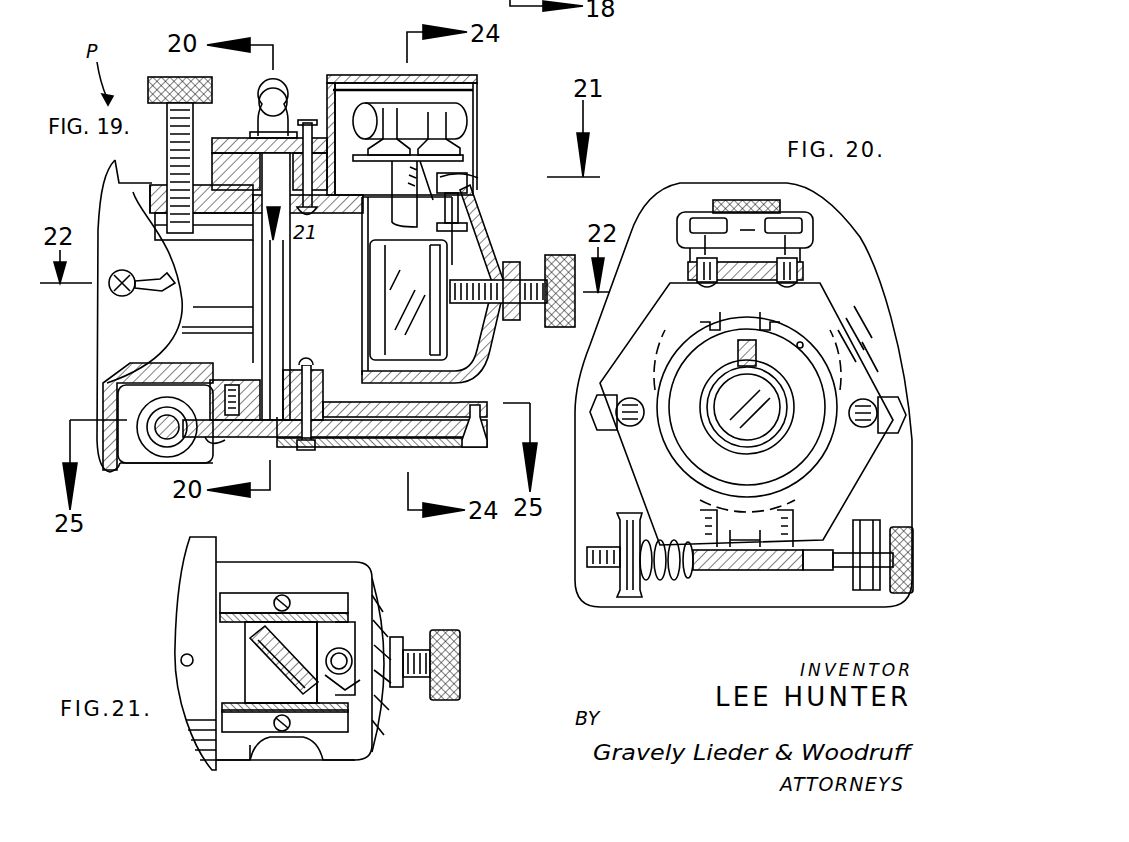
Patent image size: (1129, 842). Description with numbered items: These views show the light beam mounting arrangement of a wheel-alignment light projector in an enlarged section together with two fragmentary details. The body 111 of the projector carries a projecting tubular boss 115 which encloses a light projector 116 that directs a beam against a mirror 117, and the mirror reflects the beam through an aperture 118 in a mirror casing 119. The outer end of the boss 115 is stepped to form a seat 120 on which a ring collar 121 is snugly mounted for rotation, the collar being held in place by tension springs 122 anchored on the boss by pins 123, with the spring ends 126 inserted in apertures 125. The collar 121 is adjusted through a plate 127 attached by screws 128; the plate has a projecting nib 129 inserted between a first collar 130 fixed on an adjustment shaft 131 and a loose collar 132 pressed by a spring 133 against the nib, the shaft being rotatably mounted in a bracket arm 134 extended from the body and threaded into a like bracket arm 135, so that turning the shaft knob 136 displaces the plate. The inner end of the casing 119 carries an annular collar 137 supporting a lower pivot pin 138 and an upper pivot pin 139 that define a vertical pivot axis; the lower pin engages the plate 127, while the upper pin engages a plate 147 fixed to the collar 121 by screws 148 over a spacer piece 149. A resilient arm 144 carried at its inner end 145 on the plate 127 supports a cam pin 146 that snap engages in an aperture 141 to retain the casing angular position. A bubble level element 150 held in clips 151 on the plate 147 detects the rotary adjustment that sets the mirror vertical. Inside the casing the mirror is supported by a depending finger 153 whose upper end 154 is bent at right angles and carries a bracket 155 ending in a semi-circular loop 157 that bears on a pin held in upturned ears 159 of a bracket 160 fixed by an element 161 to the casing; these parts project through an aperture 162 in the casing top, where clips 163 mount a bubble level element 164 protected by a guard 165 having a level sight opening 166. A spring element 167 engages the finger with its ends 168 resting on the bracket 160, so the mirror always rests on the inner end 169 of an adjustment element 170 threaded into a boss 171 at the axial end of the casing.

In FIG. 19, the body 111 is at (112, 170).
In FIG. 20, the body 111 is at (735, 190).
In FIG. 19, the tubular boss 115 is at (158, 187).
In FIG. 20, the tubular boss 115 is at (680, 345).
In FIG. 19, the light projector 116 is at (225, 302).
In FIG. 20, the light projector 116 is at (740, 452).
In FIG. 19, the mirror 117 is at (370, 290).
In FIG. 21, the aperture 118 is at (320, 742).
In FIG. 19, the mirror casing 119 is at (485, 366).
In FIG. 21, the mirror casing 119 is at (380, 585).
In FIG. 19, the seat 120 is at (245, 378).
In FIG. 20, the seat 120 is at (803, 343).
In FIG. 19, the ring collar 121 is at (205, 232).
In FIG. 20, the ring collar 121 is at (640, 450).
In FIG. 19, the tension springs 122 is at (158, 296).
In FIG. 19, the pins 123 is at (109, 290).
In FIG. 20, the apertures 125 is at (890, 434).
In FIG. 20, the spring ends 126 is at (597, 395).
In FIG. 19, the plate 127 is at (290, 440).
In FIG. 20, the plate 127 is at (745, 572).
In FIG. 19, the screws 128 is at (215, 446).
In FIG. 19, the nib 129 is at (172, 458).
In FIG. 19, the first collar 130 is at (135, 410).
In FIG. 20, the first collar 130 is at (795, 580).
In FIG. 19, the adjustment shaft 131 is at (160, 458).
In FIG. 20, the loose collar 132 is at (640, 585).
In FIG. 20, the spring 133 is at (660, 585).
In FIG. 19, the bracket arm 134 is at (128, 466).
In FIG. 20, the bracket arm 134 is at (862, 592).
In FIG. 20, the bracket arm 135 is at (605, 573).
In FIG. 20, the shaft knob 136 is at (900, 597).
In FIG. 19, the annular collar 137 is at (343, 212).
In FIG. 21, the annular collar 137 is at (190, 580).
In FIG. 19, the lower pivot pin 138 is at (303, 363).
In FIG. 19, the upper pivot pin 139 is at (307, 120).
In FIG. 21, the upper pivot pin 139 is at (180, 660).
In FIG. 19, the aperture 141 is at (465, 400).
In FIG. 19, the resilient arm 144 is at (325, 446).
In FIG. 19, the inner end 145 is at (275, 445).
In FIG. 19, the cam pin 146 is at (462, 445).
In FIG. 19, the plate 147 is at (213, 147).
In FIG. 20, the plate 147 is at (805, 272).
In FIG. 19, the screws 148 is at (240, 133).
In FIG. 19, the spacer piece 149 is at (331, 165).
In FIG. 19, the bubble level element 150 is at (282, 86).
In FIG. 20, the bubble level element 150 is at (812, 215).
In FIG. 19, the clips 151 is at (292, 88).
In FIG. 20, the clips 151 is at (810, 255).
In FIG. 19, the depending finger 153 is at (368, 310).
In FIG. 21, the depending finger 153 is at (300, 598).
In FIG. 19, the upper end 154 is at (470, 157).
In FIG. 21, the bracket 155 is at (265, 655).
In FIG. 21, the semi-circular loop 157 is at (262, 677).
In FIG. 21, the upturned ears 159 is at (250, 605).
In FIG. 21, the bracket 160 is at (350, 690).
In FIG. 19, the element 161 is at (465, 207).
In FIG. 21, the element 161 is at (350, 650).
In FIG. 19, the aperture 162 is at (362, 262).
In FIG. 21, the aperture 162 is at (272, 737).
In FIG. 19, the clips 163 is at (452, 120).
In FIG. 19, the bubble level element 164 is at (417, 105).
In FIG. 19, the guard 165 is at (480, 88).
In FIG. 21, the guard 165 is at (340, 597).
In FIG. 19, the level sight opening 166 is at (378, 74).
In FIG. 19, the spring element 167 is at (480, 180).
In FIG. 21, the spring element 167 is at (350, 625).
In FIG. 21, the ends 168 is at (272, 595).
In FIG. 19, the inner end 169 is at (432, 322).
In FIG. 19, the adjustment element 170 is at (553, 326).
In FIG. 21, the adjustment element 170 is at (462, 665).
In FIG. 19, the boss 171 is at (510, 276).
In FIG. 21, the boss 171 is at (420, 648).